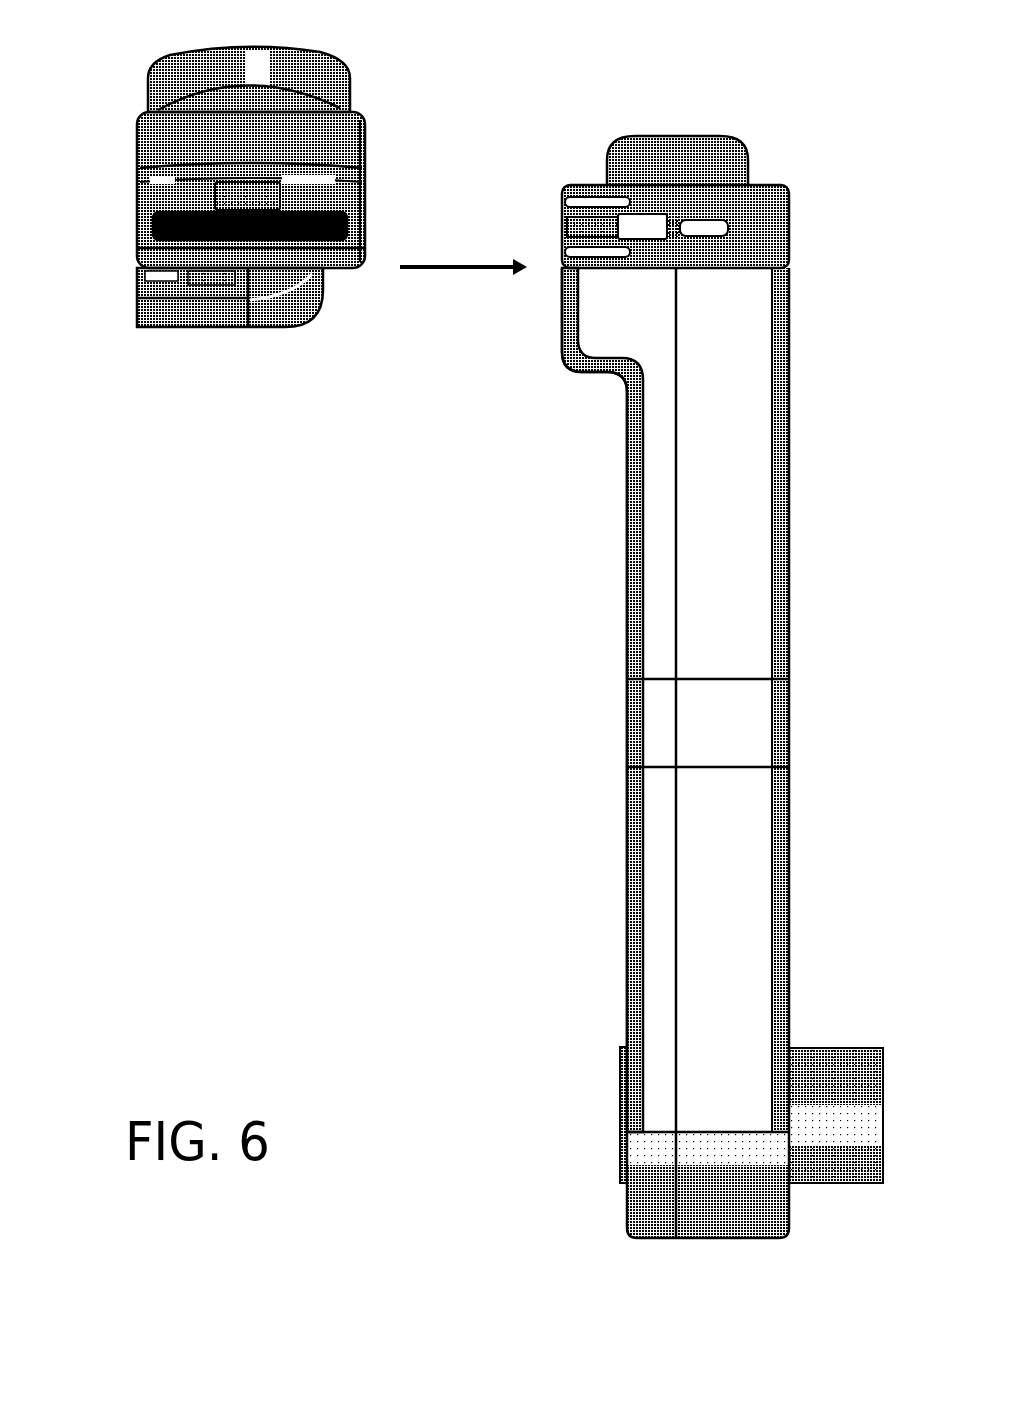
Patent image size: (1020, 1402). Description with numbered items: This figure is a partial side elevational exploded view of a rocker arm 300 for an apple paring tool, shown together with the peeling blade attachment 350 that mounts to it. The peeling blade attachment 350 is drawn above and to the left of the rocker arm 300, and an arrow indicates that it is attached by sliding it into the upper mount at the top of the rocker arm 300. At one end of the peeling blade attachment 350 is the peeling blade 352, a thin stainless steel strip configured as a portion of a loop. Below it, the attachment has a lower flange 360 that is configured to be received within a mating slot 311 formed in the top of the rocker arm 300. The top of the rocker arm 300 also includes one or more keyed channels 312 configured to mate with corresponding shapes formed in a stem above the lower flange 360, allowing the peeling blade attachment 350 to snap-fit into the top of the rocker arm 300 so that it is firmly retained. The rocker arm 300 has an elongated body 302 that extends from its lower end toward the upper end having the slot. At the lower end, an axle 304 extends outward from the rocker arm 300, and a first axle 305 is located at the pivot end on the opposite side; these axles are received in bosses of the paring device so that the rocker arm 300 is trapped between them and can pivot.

The rocker arm 300 is at (652, 696).
The elongated body 302 is at (777, 583).
The axle 304 is at (835, 1165).
The first axle 305 is at (618, 1160).
The mating slot 311 is at (542, 253).
The keyed channels 312 is at (651, 224).
The peeling blade attachment 350 is at (134, 157).
The peeling blade 352 is at (171, 56).
The lower flange 360 is at (136, 315).